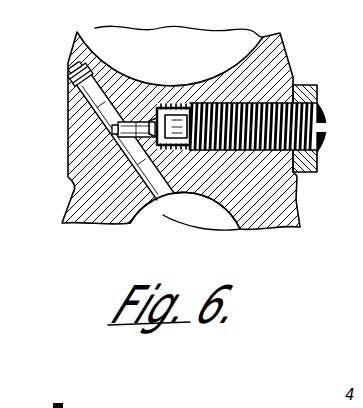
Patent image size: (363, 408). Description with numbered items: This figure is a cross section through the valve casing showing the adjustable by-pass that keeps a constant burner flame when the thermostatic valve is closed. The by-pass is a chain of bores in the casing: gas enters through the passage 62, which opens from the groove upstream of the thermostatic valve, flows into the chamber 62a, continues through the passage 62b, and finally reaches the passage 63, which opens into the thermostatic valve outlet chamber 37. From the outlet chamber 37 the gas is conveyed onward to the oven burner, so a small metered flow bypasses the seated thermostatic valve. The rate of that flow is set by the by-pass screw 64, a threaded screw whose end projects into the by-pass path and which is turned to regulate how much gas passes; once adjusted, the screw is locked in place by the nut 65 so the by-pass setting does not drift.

The outlet chamber 37 is at (167, 215).
The passage 62 is at (178, 103).
The chamber 62a is at (167, 193).
The passage 62b is at (113, 121).
The passage 63 is at (122, 152).
The by-pass screw 64 is at (322, 114).
The nut 65 is at (305, 172).